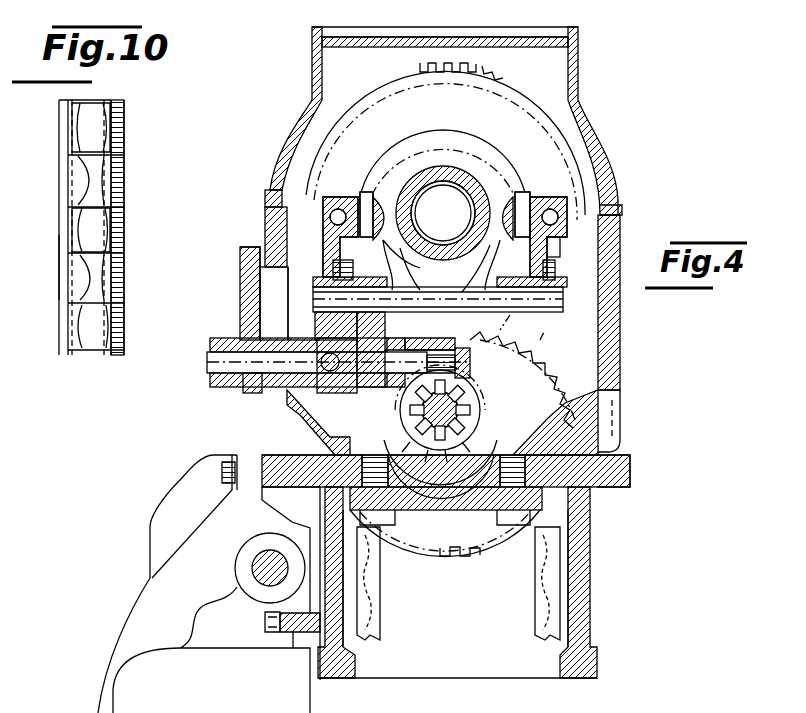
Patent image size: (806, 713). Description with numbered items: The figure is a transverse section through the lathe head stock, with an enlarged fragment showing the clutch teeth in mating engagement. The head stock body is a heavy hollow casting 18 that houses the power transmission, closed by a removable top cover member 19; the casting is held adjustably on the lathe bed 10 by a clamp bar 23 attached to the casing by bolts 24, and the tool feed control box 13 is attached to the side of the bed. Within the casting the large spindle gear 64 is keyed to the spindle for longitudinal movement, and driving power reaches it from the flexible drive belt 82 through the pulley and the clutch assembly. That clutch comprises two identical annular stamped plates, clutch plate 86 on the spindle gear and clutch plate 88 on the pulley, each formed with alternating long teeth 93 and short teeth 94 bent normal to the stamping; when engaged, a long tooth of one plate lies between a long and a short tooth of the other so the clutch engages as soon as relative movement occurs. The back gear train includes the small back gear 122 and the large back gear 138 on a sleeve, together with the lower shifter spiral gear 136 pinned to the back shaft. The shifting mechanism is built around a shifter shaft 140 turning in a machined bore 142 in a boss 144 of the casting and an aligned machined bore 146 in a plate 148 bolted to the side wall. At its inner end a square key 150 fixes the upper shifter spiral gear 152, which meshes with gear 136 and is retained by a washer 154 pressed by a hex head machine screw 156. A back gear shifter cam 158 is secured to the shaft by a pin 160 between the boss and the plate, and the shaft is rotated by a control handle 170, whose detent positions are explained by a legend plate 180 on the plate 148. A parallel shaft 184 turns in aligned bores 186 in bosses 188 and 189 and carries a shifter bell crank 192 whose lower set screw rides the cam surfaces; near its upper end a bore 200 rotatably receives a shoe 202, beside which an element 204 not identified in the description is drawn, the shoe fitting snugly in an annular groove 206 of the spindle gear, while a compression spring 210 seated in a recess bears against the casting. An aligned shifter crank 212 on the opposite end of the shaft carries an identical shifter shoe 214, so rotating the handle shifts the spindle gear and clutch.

In FIG. 4, the lathe bed 10 is at (598, 553).
In FIG. 4, the tool feed control box 13 is at (168, 492).
In FIG. 4, the casting 18 is at (622, 318).
In FIG. 4, the top cover member 19 is at (578, 100).
In FIG. 4, the clamp bar 23 is at (465, 478).
In FIG. 4, the bolts 24 is at (484, 512).
In FIG. 4, the large spindle gear 64 is at (487, 80).
In FIG. 4, the flexible drive belt 82 is at (380, 630).
In FIG. 10, the clutch plate 86 is at (118, 185).
In FIG. 10, the clutch plate 88 is at (58, 243).
In FIG. 10, the long teeth 93 is at (105, 130).
In FIG. 10, the short teeth 94 is at (105, 230).
In FIG. 4, the small back gear 122 is at (392, 440).
In FIG. 4, the lower shifter spiral gear 136 is at (455, 410).
In FIG. 4, the large back gear 138 is at (460, 553).
In FIG. 4, the shifter shaft 140 is at (208, 355).
In FIG. 4, the machined bore 142 is at (367, 388).
In FIG. 4, the boss 144 is at (387, 327).
In FIG. 4, the machined bore 146 is at (245, 385).
In FIG. 4, the plate 148 is at (240, 300).
In FIG. 4, the square key 150 is at (458, 350).
In FIG. 4, the upper shifter spiral gear 152 is at (470, 400).
In FIG. 4, the washer 154 is at (455, 352).
In FIG. 4, the hex head machine screw 156 is at (470, 382).
In FIG. 4, the back gear shifter cam 158 is at (298, 340).
In FIG. 4, the pin 160 is at (289, 330).
In FIG. 4, the control handle 170 is at (207, 378).
In FIG. 4, the legend plate 180 is at (240, 318).
In FIG. 4, the shaft 184 is at (560, 308).
In FIG. 4, the aligned bores 186 is at (403, 262).
In FIG. 4, the boss 188 is at (438, 299).
In FIG. 4, the boss 189 is at (500, 280).
In FIG. 4, the shifter bell crank 192 is at (270, 240).
In FIG. 4, the bore 200 is at (345, 185).
In FIG. 4, the shoe 202 is at (340, 208).
In FIG. 4, the bearing race 204 is at (367, 192).
In FIG. 4, the annular groove 206 is at (453, 140).
In FIG. 4, the compression spring 210 is at (555, 215).
In FIG. 4, the shifter crank 212 is at (560, 245).
In FIG. 4, the shifter shoe 214 is at (522, 192).